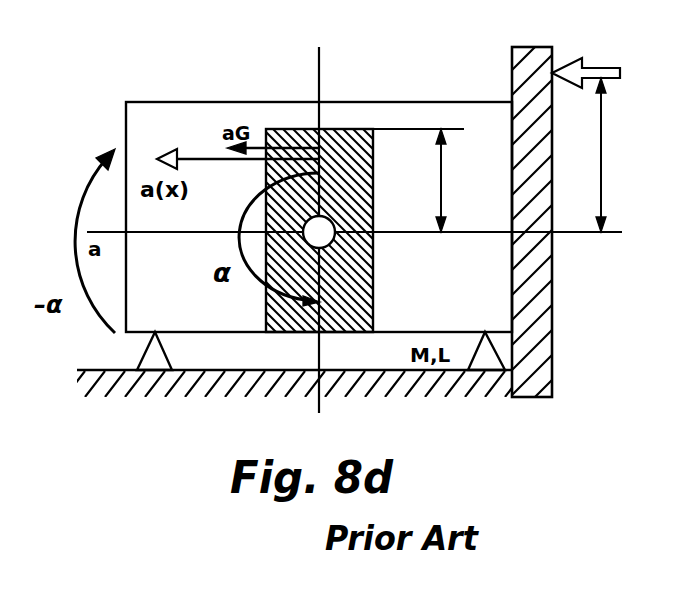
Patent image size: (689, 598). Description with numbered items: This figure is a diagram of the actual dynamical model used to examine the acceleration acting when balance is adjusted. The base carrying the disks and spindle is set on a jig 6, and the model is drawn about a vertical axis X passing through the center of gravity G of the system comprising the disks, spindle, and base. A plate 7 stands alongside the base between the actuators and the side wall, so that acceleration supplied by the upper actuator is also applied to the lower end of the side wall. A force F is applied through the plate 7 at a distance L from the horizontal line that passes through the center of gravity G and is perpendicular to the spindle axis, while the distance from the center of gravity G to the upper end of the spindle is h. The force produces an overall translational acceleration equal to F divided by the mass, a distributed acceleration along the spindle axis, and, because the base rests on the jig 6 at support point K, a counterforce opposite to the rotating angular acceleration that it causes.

The jig 6 is at (97, 386).
The plate 7 is at (537, 59).
The center of gravity G is at (336, 222).
The support point K is at (140, 351).
The force F is at (597, 73).
The distance L is at (609, 155).
The distance h is at (419, 180).
The X axis X is at (316, 216).